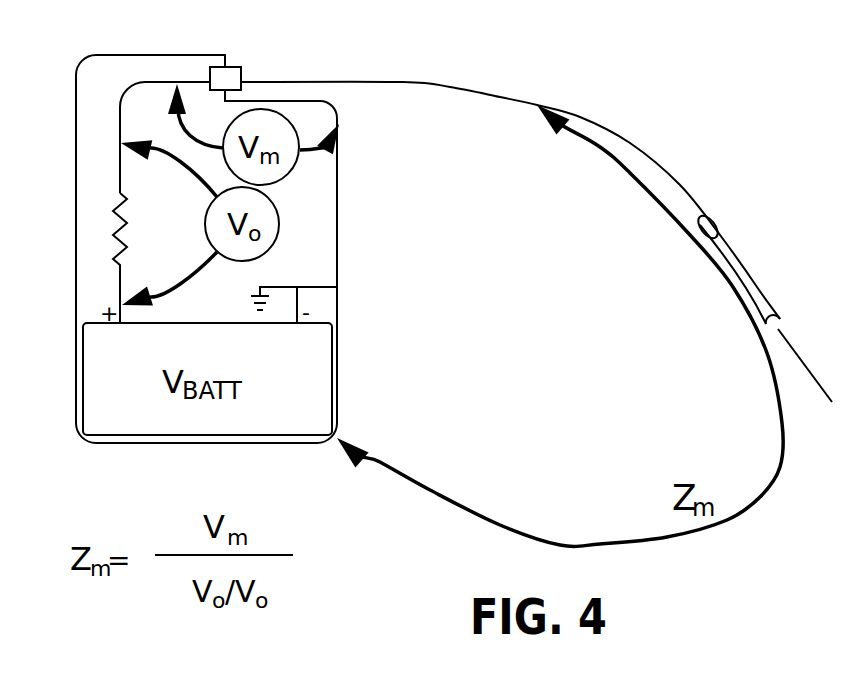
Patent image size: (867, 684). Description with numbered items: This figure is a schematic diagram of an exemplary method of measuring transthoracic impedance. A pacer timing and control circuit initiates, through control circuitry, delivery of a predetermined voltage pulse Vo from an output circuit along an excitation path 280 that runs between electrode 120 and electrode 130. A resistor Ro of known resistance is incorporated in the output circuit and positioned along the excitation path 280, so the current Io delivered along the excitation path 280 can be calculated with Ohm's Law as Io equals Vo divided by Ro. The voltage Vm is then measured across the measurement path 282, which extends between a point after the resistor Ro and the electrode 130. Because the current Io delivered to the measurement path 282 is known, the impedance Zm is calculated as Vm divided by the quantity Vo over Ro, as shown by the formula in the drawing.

The electrode 120 is at (760, 280).
The electrode 130 is at (338, 258).
The excitation path 280 is at (118, 291).
The measurement path 282 is at (437, 82).